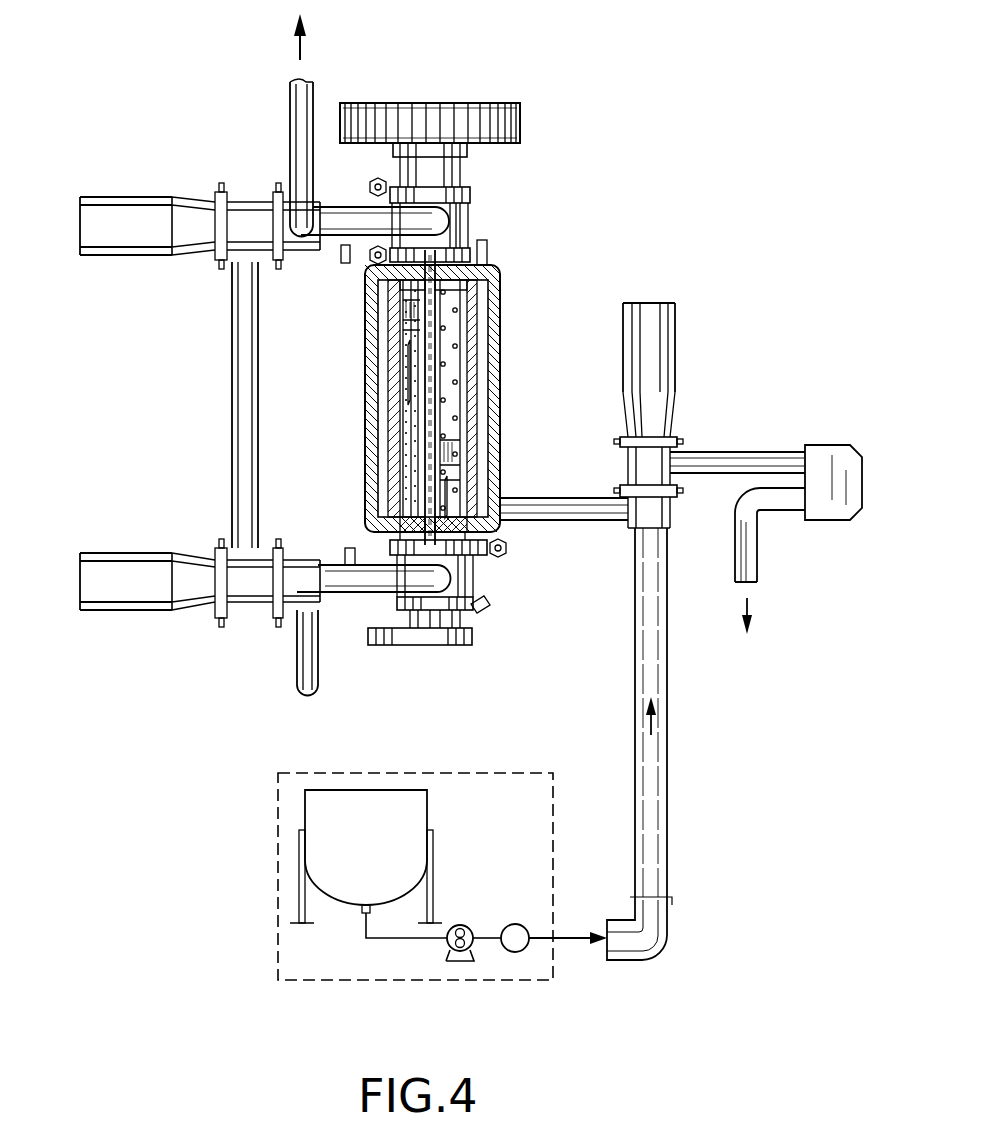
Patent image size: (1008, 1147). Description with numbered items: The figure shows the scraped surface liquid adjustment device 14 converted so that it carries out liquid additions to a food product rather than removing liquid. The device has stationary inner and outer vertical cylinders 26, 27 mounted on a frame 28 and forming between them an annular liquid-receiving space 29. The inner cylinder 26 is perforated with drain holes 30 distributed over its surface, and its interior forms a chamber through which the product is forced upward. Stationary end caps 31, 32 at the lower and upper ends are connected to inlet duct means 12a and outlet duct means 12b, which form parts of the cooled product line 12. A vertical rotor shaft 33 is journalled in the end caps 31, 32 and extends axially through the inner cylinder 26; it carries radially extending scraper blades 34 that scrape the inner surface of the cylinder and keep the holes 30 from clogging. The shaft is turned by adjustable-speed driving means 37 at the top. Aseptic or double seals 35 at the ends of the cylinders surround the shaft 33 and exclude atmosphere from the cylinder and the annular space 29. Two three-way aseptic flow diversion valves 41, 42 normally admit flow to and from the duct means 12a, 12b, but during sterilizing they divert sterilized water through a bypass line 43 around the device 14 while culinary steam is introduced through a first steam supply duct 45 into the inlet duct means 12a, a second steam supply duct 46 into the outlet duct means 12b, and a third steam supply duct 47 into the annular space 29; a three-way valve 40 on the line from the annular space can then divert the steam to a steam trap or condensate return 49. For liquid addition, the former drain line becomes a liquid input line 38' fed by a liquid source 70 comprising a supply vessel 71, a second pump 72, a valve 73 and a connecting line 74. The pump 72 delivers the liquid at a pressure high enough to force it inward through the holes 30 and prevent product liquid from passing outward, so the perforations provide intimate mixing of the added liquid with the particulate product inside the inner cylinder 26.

The cooled product line 12 is at (298, 122).
The inlet duct means 12a is at (360, 598).
The outlet duct means 12b is at (345, 207).
The scraped surface liquid adjustment device 14 is at (531, 131).
The inner vertical cylinder 26 is at (392, 446).
The outer vertical cylinder 27 is at (500, 428).
The frame 28 is at (432, 646).
The annular liquid-receiving space 29 is at (385, 417).
The drain holes 30 is at (447, 383).
The lower end cap 31 is at (470, 584).
The upper end cap 32 is at (470, 214).
The rotor shaft 33 is at (428, 172).
The scraper blades 34 is at (418, 360).
The aseptic or double seals 35 is at (446, 282).
The driving means 37 is at (402, 115).
The liquid input line 38' is at (564, 533).
The valve 40 is at (672, 345).
The three-way aseptic flow diversion valve 41 is at (138, 554).
The three-way aseptic flow diversion valve 42 is at (148, 255).
The bypass line 43 is at (232, 355).
The first steam supply duct 45 is at (345, 555).
The second steam supply duct 46 is at (341, 252).
The third steam supply duct 47 is at (488, 254).
The steam trap or condensate return 49 is at (820, 520).
The liquid source 70 is at (443, 773).
The supply vessel 71 is at (428, 812).
The second pump 72 is at (466, 925).
The valve 73 is at (518, 924).
The connecting line 74 is at (574, 934).